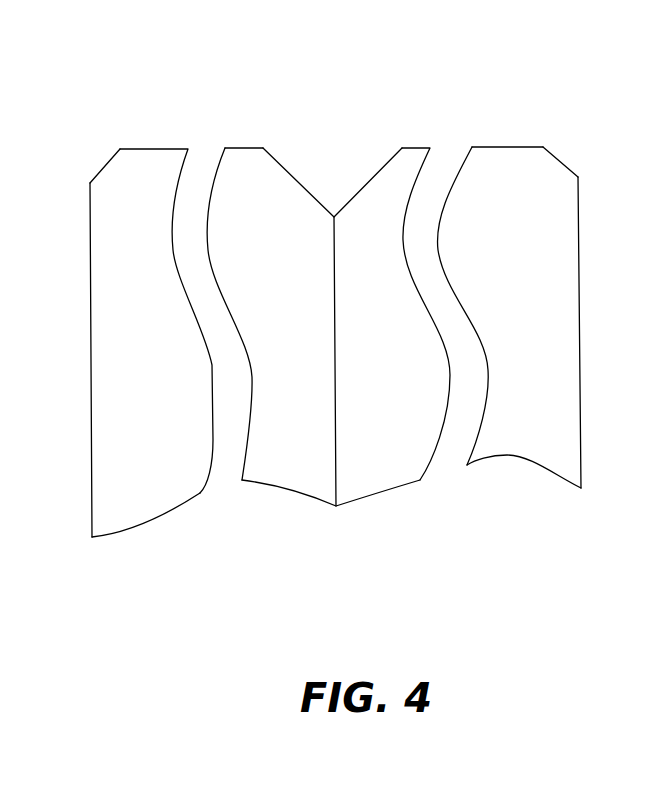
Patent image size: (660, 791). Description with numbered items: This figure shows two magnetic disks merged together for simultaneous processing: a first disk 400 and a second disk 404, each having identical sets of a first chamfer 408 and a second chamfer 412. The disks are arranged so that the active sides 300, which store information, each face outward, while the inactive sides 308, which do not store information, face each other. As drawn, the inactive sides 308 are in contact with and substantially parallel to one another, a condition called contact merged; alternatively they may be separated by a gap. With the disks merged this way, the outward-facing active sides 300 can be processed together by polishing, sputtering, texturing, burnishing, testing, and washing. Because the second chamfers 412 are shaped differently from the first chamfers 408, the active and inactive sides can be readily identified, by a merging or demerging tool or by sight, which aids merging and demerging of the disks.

The active side 300 is at (342, 341).
The inactive side 308 is at (336, 506).
The first disk 400 is at (163, 527).
The second disk 404 is at (557, 485).
The first chamfer 408 is at (103, 168).
The second chamfer 412 is at (295, 178).